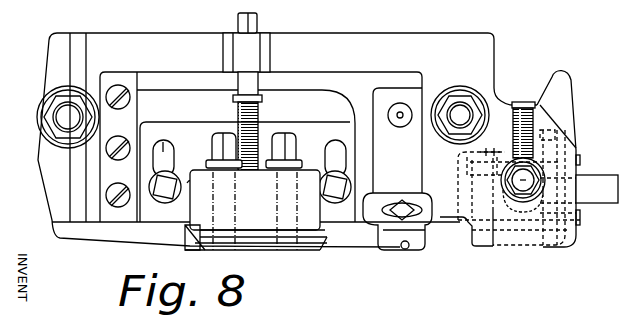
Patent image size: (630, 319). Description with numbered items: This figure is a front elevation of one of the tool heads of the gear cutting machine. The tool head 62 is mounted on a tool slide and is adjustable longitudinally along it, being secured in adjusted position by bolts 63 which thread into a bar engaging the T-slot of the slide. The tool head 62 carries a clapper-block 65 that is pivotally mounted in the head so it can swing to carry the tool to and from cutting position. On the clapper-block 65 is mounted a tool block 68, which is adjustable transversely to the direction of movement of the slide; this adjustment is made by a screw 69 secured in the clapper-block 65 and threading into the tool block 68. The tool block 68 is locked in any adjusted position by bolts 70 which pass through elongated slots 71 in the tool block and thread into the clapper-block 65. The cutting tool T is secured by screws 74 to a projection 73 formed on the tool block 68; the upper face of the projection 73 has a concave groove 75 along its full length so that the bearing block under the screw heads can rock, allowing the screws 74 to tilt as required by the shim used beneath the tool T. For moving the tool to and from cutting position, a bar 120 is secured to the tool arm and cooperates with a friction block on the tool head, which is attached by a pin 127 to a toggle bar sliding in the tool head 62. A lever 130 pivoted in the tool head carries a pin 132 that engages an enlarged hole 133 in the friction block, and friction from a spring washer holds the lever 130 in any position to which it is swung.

The tool head 62 is at (452, 42).
The bolt 63 is at (467, 110).
The clapper-block 65 is at (358, 80).
The tool block 68 is at (298, 127).
The screw 69 is at (248, 82).
The bolt 70 is at (173, 180).
The elongated slot 71 is at (163, 150).
The projection 73 is at (200, 208).
The screw 74 is at (213, 141).
The concave groove 75 is at (190, 181).
The bar 120 is at (602, 187).
The pin 127 is at (477, 242).
The lever 130 is at (565, 94).
The pin 132 is at (516, 214).
The enlarged hole 133 is at (507, 198).
The tool T is at (300, 252).